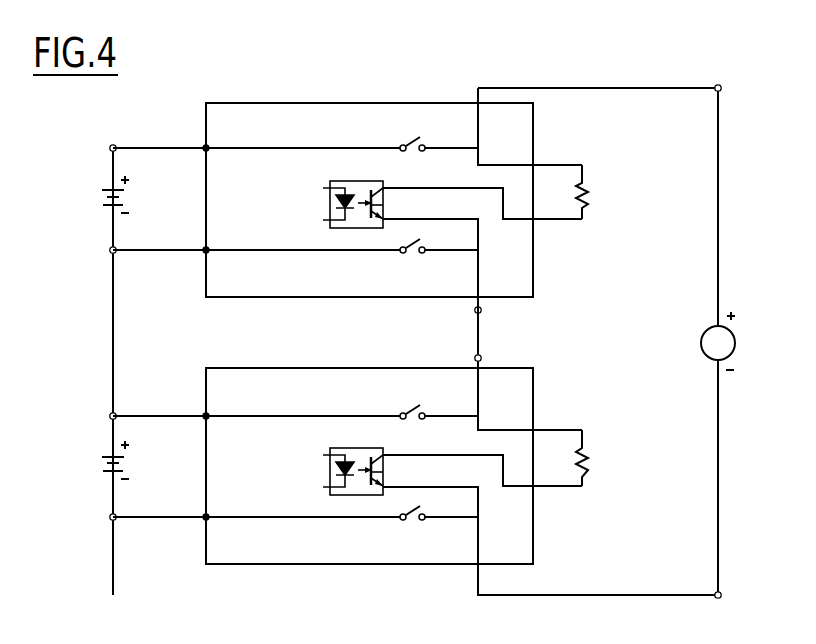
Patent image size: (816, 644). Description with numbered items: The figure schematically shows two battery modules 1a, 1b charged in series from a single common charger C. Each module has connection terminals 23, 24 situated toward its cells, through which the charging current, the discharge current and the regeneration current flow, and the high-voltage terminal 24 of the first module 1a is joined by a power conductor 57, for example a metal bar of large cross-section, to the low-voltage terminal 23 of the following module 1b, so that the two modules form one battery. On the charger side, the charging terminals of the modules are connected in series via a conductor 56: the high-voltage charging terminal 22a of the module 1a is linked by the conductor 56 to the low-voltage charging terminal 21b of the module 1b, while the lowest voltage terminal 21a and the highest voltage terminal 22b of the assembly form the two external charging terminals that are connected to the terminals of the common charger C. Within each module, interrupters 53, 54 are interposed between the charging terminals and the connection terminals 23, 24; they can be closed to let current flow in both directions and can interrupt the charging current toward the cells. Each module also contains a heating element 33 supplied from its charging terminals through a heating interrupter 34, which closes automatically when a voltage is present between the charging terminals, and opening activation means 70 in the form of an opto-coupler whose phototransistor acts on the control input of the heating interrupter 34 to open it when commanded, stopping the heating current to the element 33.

The module 1a is at (373, 573).
The module 1b is at (553, 259).
The low-voltage charging terminal 21a is at (720, 598).
The low-voltage charging terminal 21b is at (481, 311).
The high-voltage charging terminal 22a is at (474, 357).
The high-voltage charging terminal 22b is at (716, 86).
The low-voltage connection terminal 23 is at (114, 252).
The high-voltage connection terminal 24 is at (111, 147).
The heating element 33 is at (586, 195).
The heating interrupter 34 is at (383, 205).
The interrupter 53 is at (410, 253).
The interrupter 54 is at (415, 139).
The conductor 56 is at (476, 330).
The power conductor 57 is at (112, 333).
The means for activation of opening 70 is at (330, 186).
The common charger C is at (702, 343).